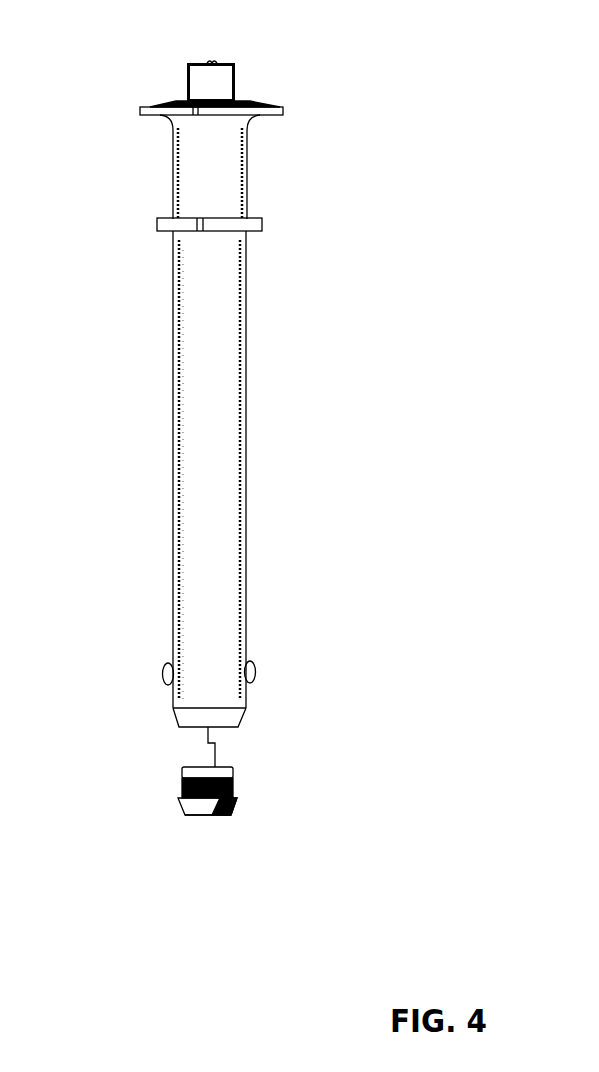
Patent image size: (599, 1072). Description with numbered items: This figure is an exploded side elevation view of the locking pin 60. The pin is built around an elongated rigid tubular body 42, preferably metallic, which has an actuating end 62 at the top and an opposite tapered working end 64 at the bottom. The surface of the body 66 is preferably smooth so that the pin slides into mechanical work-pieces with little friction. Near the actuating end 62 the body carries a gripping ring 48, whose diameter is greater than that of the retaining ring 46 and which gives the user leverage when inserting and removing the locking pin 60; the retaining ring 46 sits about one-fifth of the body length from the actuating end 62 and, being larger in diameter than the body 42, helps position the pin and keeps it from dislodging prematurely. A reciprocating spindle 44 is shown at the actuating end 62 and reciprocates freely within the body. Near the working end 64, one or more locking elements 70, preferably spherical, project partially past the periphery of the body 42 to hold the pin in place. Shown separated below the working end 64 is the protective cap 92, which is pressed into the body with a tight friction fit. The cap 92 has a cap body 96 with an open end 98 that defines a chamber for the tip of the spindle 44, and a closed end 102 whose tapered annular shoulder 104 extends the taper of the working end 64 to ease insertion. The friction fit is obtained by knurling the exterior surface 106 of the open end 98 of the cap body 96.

The tubular body 42 is at (247, 510).
The reciprocating spindle 44 is at (201, 78).
The retaining ring 46 is at (157, 227).
The gripping ring 48 is at (283, 111).
The locking pin 60 is at (313, 324).
The actuating end 62 is at (239, 91).
The working end 64 is at (239, 722).
The surface of the body 66 is at (198, 369).
The locking elements 70 is at (163, 670).
The protective cap 92 is at (251, 840).
The cap body 96 is at (234, 786).
The open end 98 is at (196, 765).
The closed end 102 is at (196, 816).
The tapered annular shoulder 104 is at (180, 798).
The exterior surface 106 is at (182, 788).